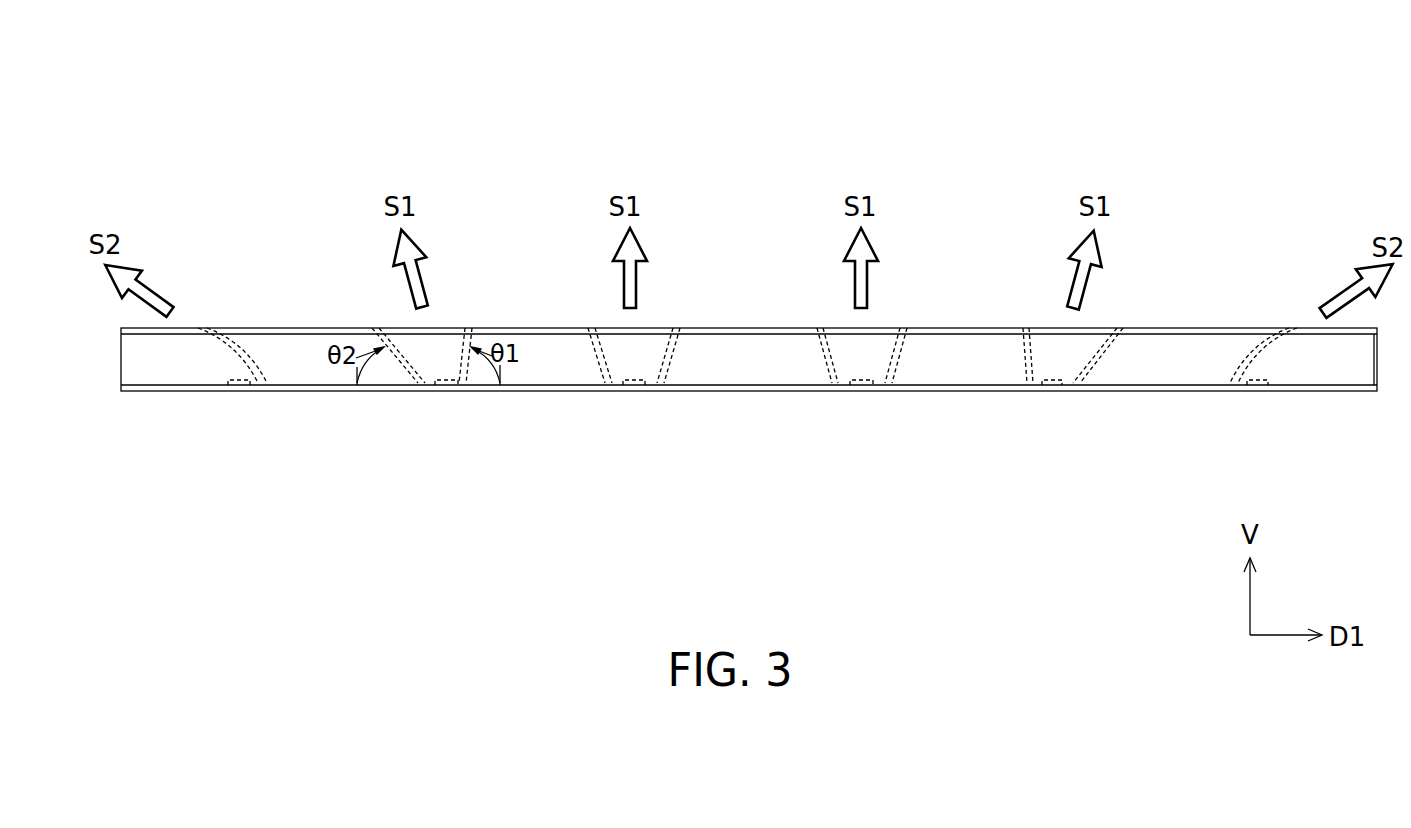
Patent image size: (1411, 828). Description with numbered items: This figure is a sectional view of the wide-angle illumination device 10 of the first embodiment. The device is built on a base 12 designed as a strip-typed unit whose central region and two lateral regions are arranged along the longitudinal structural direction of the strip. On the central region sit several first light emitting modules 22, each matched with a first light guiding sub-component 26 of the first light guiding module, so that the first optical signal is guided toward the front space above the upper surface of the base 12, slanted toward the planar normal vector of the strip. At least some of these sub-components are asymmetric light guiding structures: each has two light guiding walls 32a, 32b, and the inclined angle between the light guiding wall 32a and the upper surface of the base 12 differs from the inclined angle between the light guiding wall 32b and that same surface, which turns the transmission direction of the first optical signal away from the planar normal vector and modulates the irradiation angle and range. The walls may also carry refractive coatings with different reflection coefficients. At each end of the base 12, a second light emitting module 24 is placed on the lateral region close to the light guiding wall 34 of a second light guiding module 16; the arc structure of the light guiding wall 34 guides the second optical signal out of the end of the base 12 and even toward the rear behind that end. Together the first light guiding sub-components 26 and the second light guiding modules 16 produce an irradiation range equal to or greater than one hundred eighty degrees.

The wide-angle illumination device 10 is at (1203, 120).
The base 12 is at (140, 392).
The second light guiding module 16 is at (235, 345).
The first light emitting module 22 is at (440, 388).
The second light emitting module 24 is at (237, 388).
The first light guiding sub-component 26 is at (747, 440).
The light guiding wall 32a is at (478, 373).
The light guiding wall 32b is at (385, 373).
The light guiding wall 34 is at (747, 313).